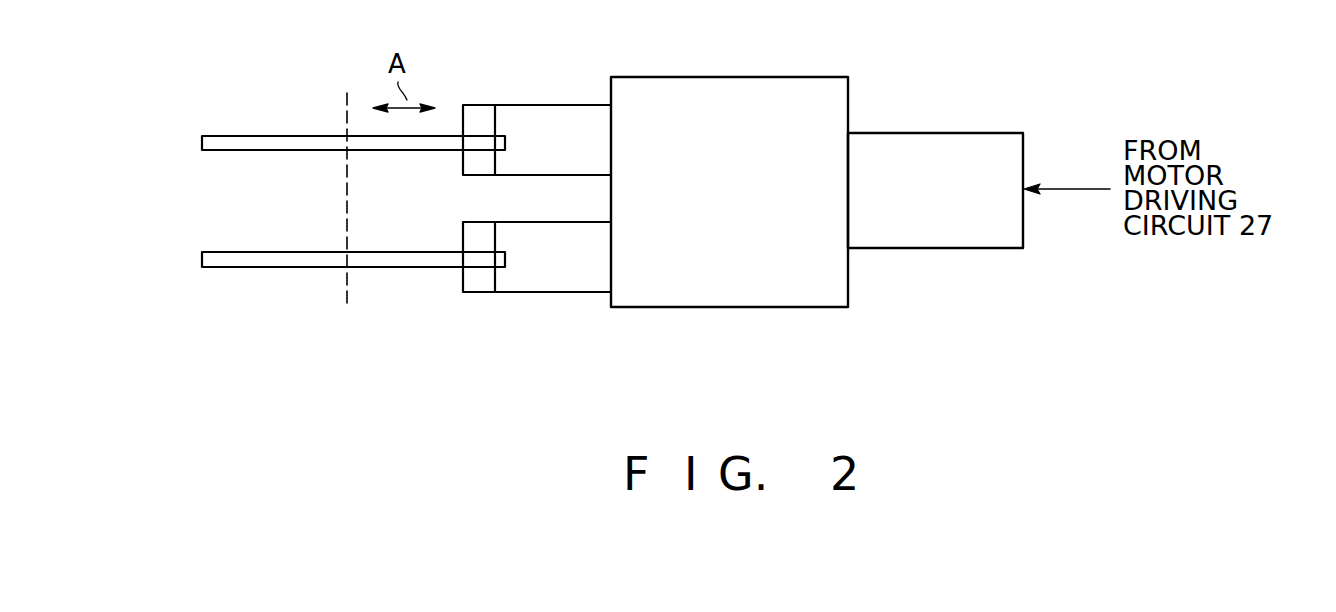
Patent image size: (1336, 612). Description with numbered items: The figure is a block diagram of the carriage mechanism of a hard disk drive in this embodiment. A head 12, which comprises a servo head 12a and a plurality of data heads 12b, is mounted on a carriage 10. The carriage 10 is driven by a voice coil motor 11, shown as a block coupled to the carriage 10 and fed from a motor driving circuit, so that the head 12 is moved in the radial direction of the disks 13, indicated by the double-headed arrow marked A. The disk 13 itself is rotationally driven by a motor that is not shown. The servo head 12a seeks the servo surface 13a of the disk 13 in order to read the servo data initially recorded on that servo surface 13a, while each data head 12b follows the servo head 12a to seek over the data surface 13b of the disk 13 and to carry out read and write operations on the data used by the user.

The carriage 10 is at (798, 77).
The voice coil motor 11 is at (966, 133).
The head 12 is at (504, 214).
The servo head 12a is at (478, 285).
The data head 12b is at (483, 105).
The disk 13 is at (323, 201).
The servo surface 13a is at (284, 268).
The data surface 13b is at (270, 136).